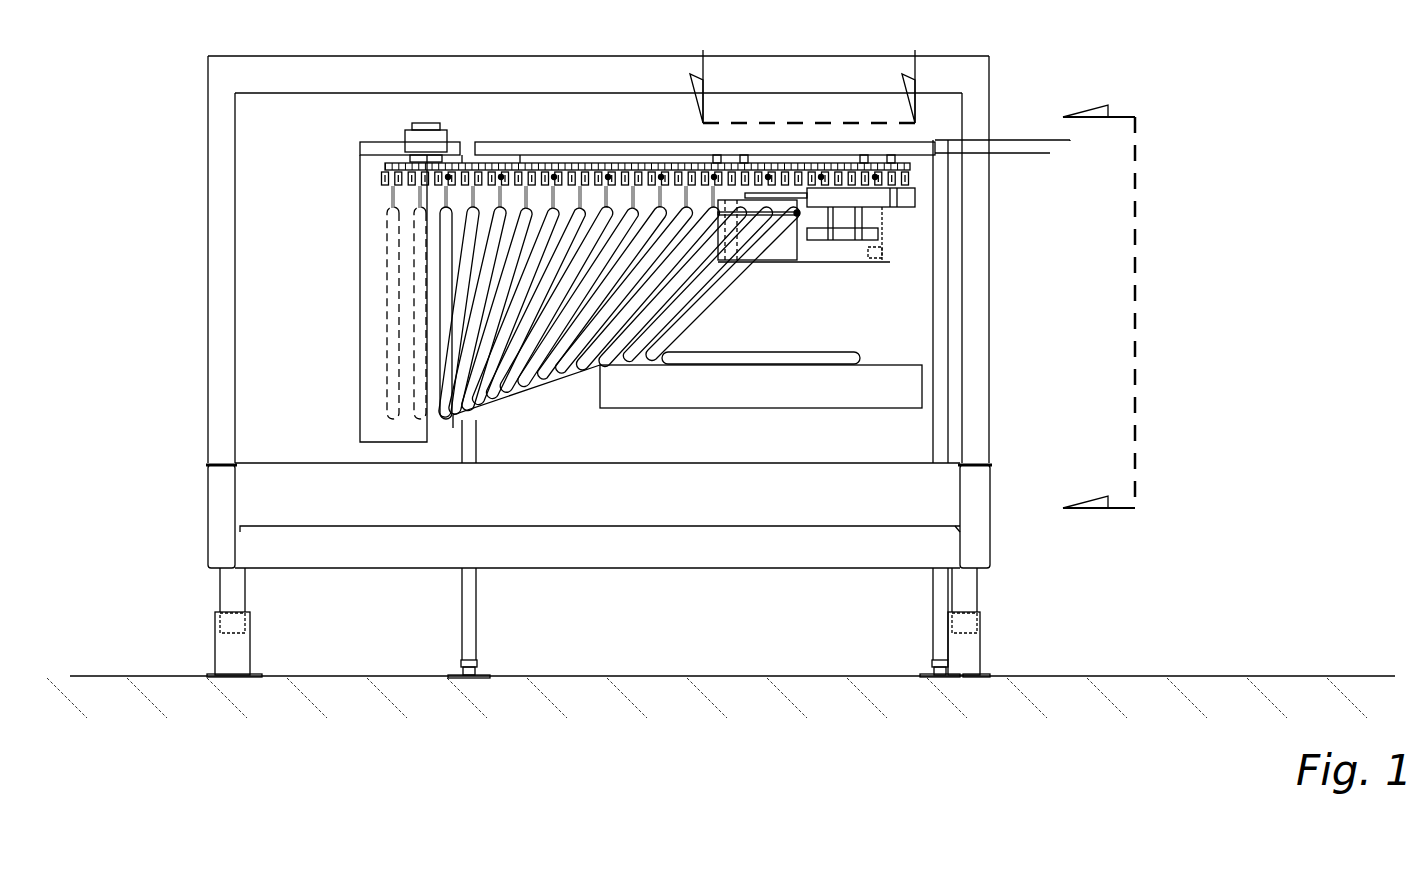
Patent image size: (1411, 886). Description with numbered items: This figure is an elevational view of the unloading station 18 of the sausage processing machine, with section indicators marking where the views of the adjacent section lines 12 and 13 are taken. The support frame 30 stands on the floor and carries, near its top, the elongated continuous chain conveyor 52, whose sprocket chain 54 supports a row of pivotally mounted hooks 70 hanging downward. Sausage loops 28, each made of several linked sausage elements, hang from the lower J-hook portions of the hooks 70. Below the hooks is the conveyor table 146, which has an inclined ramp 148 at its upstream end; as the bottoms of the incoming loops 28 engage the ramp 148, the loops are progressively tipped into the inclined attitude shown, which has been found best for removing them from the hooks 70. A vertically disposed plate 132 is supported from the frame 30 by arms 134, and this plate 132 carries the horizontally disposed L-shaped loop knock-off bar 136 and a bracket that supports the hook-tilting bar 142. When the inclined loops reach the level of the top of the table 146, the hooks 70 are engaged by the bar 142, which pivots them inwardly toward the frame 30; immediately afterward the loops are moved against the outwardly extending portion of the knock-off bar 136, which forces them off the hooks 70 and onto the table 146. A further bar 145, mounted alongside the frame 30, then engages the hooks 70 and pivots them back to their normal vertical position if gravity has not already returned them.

The support frame 30 is at (210, 218).
The unloading station 18 is at (1015, 264).
The bar 145 is at (905, 181).
The sprocket chain 54 is at (506, 165).
The chain conveyor 52 is at (672, 168).
The hooks 70 is at (420, 195).
The sausage loops 28 is at (418, 338).
The conveyor table 146 is at (765, 392).
The inclined ramp 148 is at (483, 400).
The hook-tilting bar 142 is at (779, 197).
The loop knock-off bar 136 is at (797, 220).
The plate 132 is at (818, 262).
The arms 134 is at (876, 267).
The section line 13 is at (818, 68).
The section line 12 is at (1073, 305).